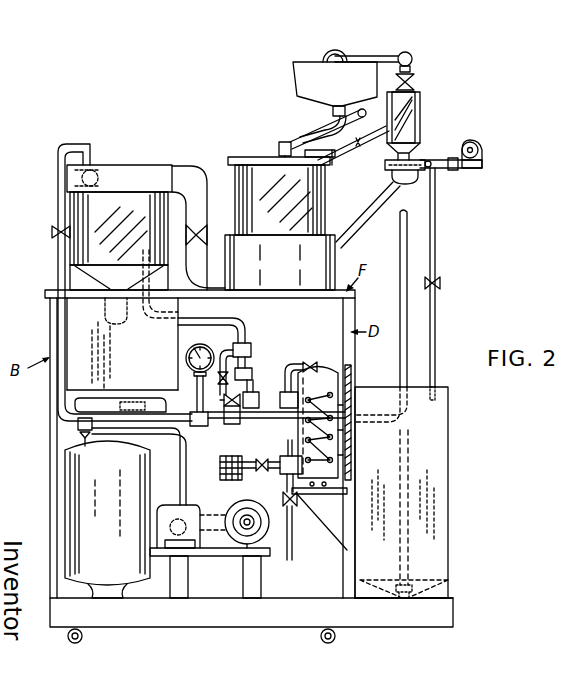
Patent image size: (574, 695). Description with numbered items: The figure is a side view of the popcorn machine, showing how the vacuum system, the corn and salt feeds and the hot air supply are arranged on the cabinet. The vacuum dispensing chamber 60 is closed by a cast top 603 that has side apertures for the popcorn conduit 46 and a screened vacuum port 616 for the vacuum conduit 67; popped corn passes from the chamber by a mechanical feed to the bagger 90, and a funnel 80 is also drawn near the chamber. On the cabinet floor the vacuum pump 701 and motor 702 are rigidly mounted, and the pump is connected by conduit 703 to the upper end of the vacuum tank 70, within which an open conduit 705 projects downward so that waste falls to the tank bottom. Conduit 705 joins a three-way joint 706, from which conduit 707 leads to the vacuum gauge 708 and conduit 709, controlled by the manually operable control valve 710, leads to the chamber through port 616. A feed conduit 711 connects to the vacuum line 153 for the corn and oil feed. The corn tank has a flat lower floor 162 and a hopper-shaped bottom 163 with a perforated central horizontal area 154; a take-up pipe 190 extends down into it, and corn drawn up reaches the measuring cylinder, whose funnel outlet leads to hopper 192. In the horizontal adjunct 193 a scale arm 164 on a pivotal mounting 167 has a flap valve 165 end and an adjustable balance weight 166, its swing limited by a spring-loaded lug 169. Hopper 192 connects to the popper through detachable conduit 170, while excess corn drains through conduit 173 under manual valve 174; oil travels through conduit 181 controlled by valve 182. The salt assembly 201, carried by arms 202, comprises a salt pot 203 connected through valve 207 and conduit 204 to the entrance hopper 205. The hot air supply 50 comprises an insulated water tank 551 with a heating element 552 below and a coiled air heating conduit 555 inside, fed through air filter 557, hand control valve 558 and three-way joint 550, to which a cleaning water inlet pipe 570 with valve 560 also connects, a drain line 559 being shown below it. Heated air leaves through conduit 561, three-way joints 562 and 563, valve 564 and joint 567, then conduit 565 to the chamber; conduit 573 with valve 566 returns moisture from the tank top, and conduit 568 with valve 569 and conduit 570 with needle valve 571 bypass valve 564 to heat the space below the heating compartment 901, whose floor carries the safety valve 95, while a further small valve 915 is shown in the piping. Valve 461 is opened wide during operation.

The hot air supply 50 is at (355, 440).
The vacuum dispensing chamber 60 is at (135, 165).
The vacuum conduit 67 is at (70, 258).
The vacuum tank 70 is at (75, 540).
The funnel 80 is at (102, 318).
The bagger 90 is at (84, 366).
The valve 95 is at (132, 403).
The popcorn conduit 46 is at (196, 188).
The vacuum line 153 is at (407, 335).
The central horizontal area 154 is at (400, 612).
The lower floor 162 is at (432, 600).
The hopper-shaped bottom 163 is at (440, 590).
The scale arm 164 is at (470, 168).
The flap valve 165 is at (385, 166).
The adjustable balance weight 166 is at (453, 170).
The intermediate pivotal mounting 167 is at (429, 160).
The lug 169 is at (480, 162).
The connecting detachable conduit 170 is at (372, 222).
The conduit 173 is at (435, 235).
The manual valve 174 is at (440, 283).
The conduit 181 is at (334, 155).
The manual control valve 182 is at (353, 143).
The corn take-up pipe 190 is at (408, 533).
The hopper 192 is at (394, 178).
The horizontal adjunct 193 is at (463, 146).
The salt assembly 201 is at (290, 77).
The arms 202 is at (392, 56).
The salt pot 203 is at (318, 72).
The conduit 204 is at (300, 136).
The entrance hopper 205 is at (279, 146).
The valve 207 is at (330, 118).
The valve 461 is at (211, 230).
The three-way joint 550 is at (291, 455).
The insulated water tank 551 is at (350, 385).
The heating element 552 is at (320, 519).
The air heating conduit 555 is at (336, 455).
The air filter 557 is at (262, 452).
The hand control valve 558 is at (236, 480).
The drain pipe 559 is at (290, 560).
The manual control valve 560 is at (285, 504).
The conduit 561 is at (276, 419).
The three-way joint 562 is at (290, 386).
The three-way joint 563 is at (253, 409).
The valve 564 is at (252, 374).
The conduit 565 is at (200, 318).
The manual control valve 566 is at (316, 372).
The joint 567 is at (250, 346).
The conduit 568 is at (172, 412).
The valve 569 is at (231, 425).
The conduit 570 is at (223, 352).
The needle valve 571 is at (226, 372).
The conduit 573 is at (308, 362).
The top 603 is at (168, 166).
The vacuum port 616 is at (95, 171).
The vacuum pump 701 is at (176, 510).
The motor 702 is at (231, 510).
The conduit 703 is at (186, 478).
The open conduit 705 is at (82, 440).
The three-way joint 706 is at (77, 426).
The conduit 707 is at (176, 456).
The vacuum gauge 708 is at (190, 350).
The conduit 709 is at (62, 370).
The control valve 710 is at (54, 230).
The feed conduit 711 is at (200, 427).
The heating compartment 901 is at (83, 399).
The valve 915 is at (232, 389).